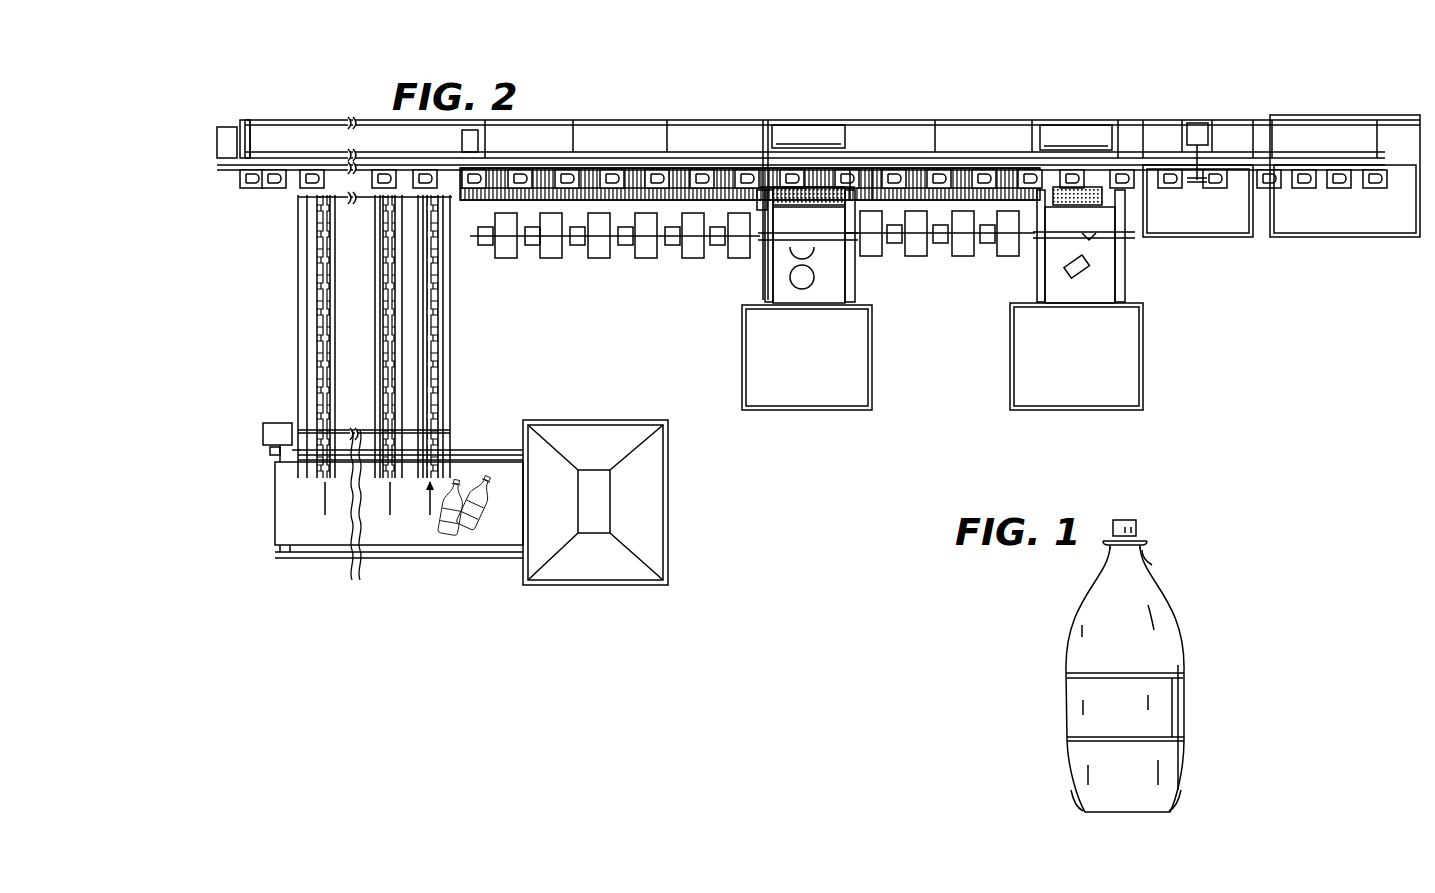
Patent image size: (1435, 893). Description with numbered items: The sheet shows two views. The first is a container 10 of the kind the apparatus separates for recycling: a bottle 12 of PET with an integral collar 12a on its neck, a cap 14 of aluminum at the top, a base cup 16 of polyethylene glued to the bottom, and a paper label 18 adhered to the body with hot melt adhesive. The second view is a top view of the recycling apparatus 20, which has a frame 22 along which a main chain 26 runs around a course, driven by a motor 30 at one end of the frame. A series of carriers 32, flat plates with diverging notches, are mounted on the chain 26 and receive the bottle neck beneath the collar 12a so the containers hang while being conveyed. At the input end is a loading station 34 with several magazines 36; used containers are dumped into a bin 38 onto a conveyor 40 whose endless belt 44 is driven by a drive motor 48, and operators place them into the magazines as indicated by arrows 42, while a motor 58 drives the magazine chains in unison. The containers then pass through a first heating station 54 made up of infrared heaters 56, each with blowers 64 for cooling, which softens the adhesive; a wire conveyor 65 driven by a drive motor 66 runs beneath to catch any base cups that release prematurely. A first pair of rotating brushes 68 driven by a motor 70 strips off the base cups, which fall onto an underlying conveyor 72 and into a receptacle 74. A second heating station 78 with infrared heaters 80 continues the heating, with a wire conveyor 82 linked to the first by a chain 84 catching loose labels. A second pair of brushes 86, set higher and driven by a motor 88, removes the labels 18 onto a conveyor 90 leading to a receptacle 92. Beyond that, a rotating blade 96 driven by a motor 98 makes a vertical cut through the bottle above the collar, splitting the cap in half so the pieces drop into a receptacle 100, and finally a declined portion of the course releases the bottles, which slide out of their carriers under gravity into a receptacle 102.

In FIG. 2, the container 10 is at (375, 263).
In FIG. 1, the container 10 is at (1230, 537).
In FIG. 1, the bottle 12 is at (1088, 588).
In FIG. 1, the collar 12a is at (1143, 552).
In FIG. 1, the cap 14 is at (1137, 521).
In FIG. 2, the base cup 16 is at (802, 288).
In FIG. 1, the base cup 16 is at (1073, 763).
In FIG. 2, the label 18 is at (1093, 241).
In FIG. 1, the label 18 is at (1172, 717).
In FIG. 2, the recycling apparatus 20 is at (1312, 372).
In FIG. 2, the frame 22 is at (740, 116).
In FIG. 2, the main chain 26 is at (690, 160).
In FIG. 2, the motor 30 is at (236, 127).
In FIG. 2, the carrier 32 is at (330, 170).
In FIG. 2, the loading station 34 is at (265, 268).
In FIG. 2, the magazine 36 is at (418, 315).
In FIG. 2, the bin 38 is at (666, 532).
In FIG. 2, the conveyor 40 is at (317, 570).
In FIG. 2, the arrows 42 is at (395, 502).
In FIG. 2, the endless belt 44 is at (501, 458).
In FIG. 2, the drive motor 48 is at (272, 455).
In FIG. 2, the first heating station 54 is at (598, 347).
In FIG. 2, the infrared heater 56 is at (620, 213).
In FIG. 2, the motor 58 is at (282, 423).
In FIG. 2, the blower 64 is at (557, 258).
In FIG. 2, the wire conveyor 65 is at (754, 126).
In FIG. 2, the drive motor 66 is at (478, 140).
In FIG. 2, the first pair of rotating brushes 68 is at (802, 205).
In FIG. 2, the motor 70 is at (745, 215).
In FIG. 2, the conveyor 72 is at (840, 273).
In FIG. 2, the receptacle 74 is at (815, 411).
In FIG. 2, the second heating station 78 is at (933, 349).
In FIG. 2, the infrared heater 80 is at (980, 213).
In FIG. 2, the wire conveyor 82 is at (873, 178).
In FIG. 2, the chain 84 is at (816, 145).
In FIG. 2, the second pair of rotating brushes 86 is at (1079, 148).
In FIG. 2, the motor 88 is at (1043, 213).
In FIG. 2, the conveyor 90 is at (1082, 290).
In FIG. 2, the receptacle 92 is at (1144, 393).
In FIG. 2, the blade 96 is at (1195, 183).
In FIG. 2, the motor 98 is at (1200, 127).
In FIG. 2, the receptacle 100 is at (1218, 240).
In FIG. 2, the receptacle 102 is at (1370, 238).